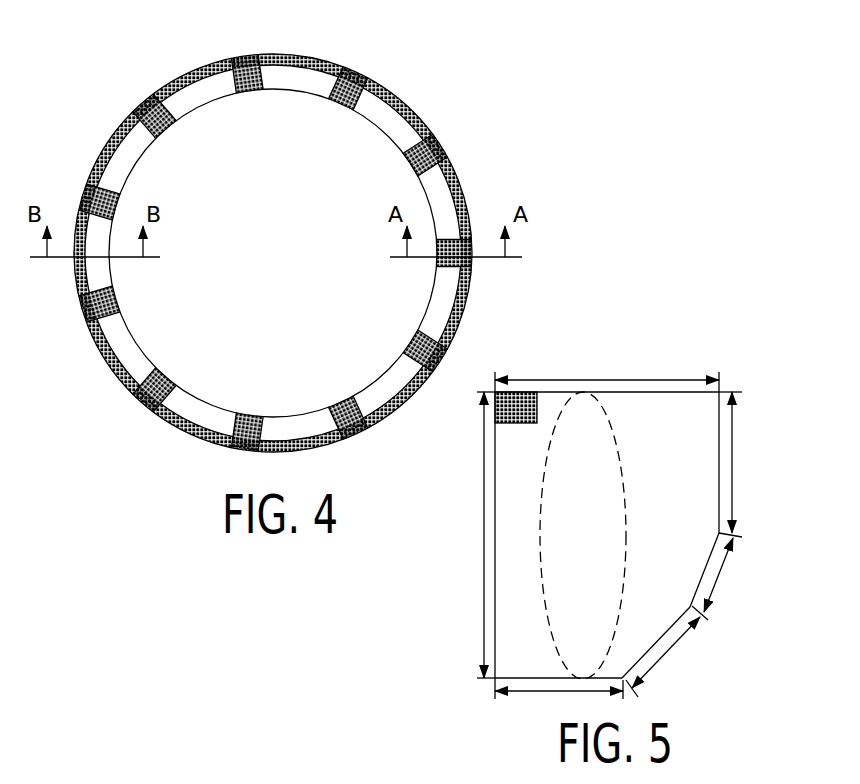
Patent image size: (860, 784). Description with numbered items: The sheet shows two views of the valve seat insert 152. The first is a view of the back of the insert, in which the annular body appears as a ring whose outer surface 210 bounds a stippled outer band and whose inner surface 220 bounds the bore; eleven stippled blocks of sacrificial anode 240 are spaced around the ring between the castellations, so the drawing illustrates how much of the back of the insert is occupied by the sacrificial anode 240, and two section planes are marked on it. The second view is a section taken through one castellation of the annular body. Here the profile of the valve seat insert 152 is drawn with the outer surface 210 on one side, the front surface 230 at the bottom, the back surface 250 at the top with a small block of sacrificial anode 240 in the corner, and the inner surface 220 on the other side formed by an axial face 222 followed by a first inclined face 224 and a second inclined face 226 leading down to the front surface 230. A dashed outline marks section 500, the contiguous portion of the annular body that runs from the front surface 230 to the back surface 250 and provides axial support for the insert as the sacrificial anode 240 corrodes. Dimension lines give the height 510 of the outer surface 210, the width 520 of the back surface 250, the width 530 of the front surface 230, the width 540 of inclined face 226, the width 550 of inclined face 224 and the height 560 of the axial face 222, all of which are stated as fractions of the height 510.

In FIG. 4, the valve seat insert 152 is at (100, 76).
In FIG. 5, the valve seat insert 152 is at (672, 524).
In FIG. 4, the outer surface 210 is at (458, 143).
In FIG. 5, the outer surface 210 is at (498, 600).
In FIG. 4, the inner surface 220 is at (398, 160).
In FIG. 5, the inner surface 220 is at (742, 612).
In FIG. 5, the axial face 222 is at (717, 485).
In FIG. 5, the inclined face 224 is at (697, 588).
In FIG. 5, the inclined face 226 is at (641, 652).
In FIG. 5, the front surface 230 is at (545, 676).
In FIG. 4, the sacrificial anode 240 is at (415, 342).
In FIG. 5, the sacrificial anode 240 is at (510, 405).
In FIG. 4, the back surface 250 is at (432, 317).
In FIG. 5, the back surface 250 is at (697, 397).
In FIG. 5, the section 500 is at (601, 406).
In FIG. 5, the height 510 is at (470, 535).
In FIG. 5, the width 520 is at (641, 380).
In FIG. 5, the width 530 is at (559, 695).
In FIG. 5, the width 540 is at (666, 657).
In FIG. 5, the width 550 is at (726, 579).
In FIG. 5, the height 560 is at (744, 464).